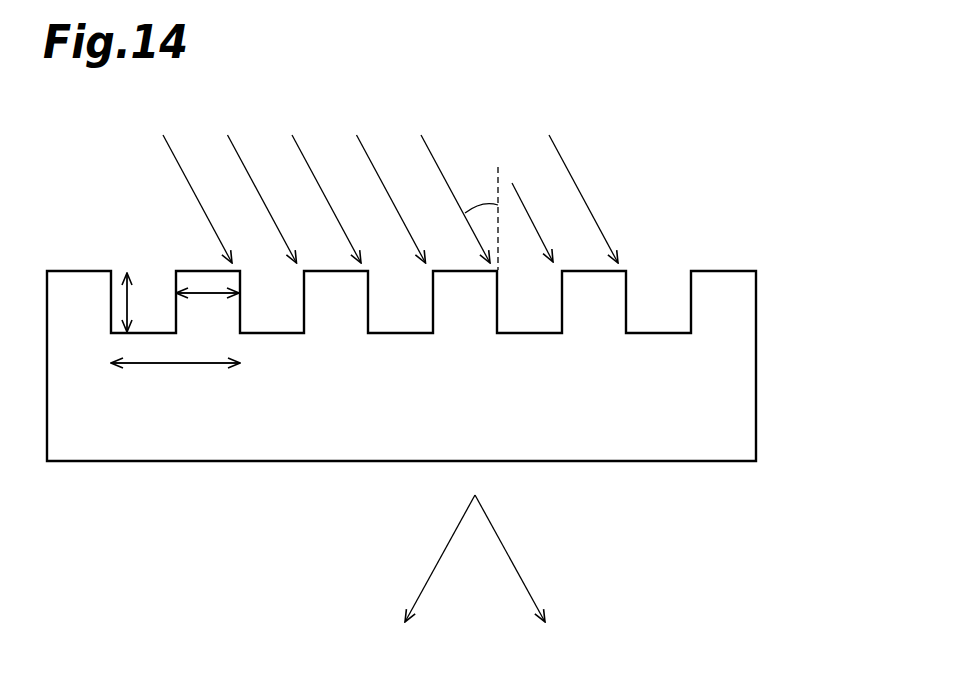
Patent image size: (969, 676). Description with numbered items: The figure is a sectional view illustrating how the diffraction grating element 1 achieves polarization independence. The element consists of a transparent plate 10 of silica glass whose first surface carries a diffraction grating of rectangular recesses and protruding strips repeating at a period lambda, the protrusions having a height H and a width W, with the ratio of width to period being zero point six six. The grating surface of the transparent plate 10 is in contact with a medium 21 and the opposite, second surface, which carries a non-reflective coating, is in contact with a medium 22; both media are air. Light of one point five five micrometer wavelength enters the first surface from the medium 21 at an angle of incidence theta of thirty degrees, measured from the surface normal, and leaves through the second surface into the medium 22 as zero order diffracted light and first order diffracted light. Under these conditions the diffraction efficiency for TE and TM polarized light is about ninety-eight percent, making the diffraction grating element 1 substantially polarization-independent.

The diffraction grating element 1 is at (859, 190).
The transparent plate 10 is at (715, 377).
The medium 21 is at (715, 223).
The medium 22 is at (715, 567).